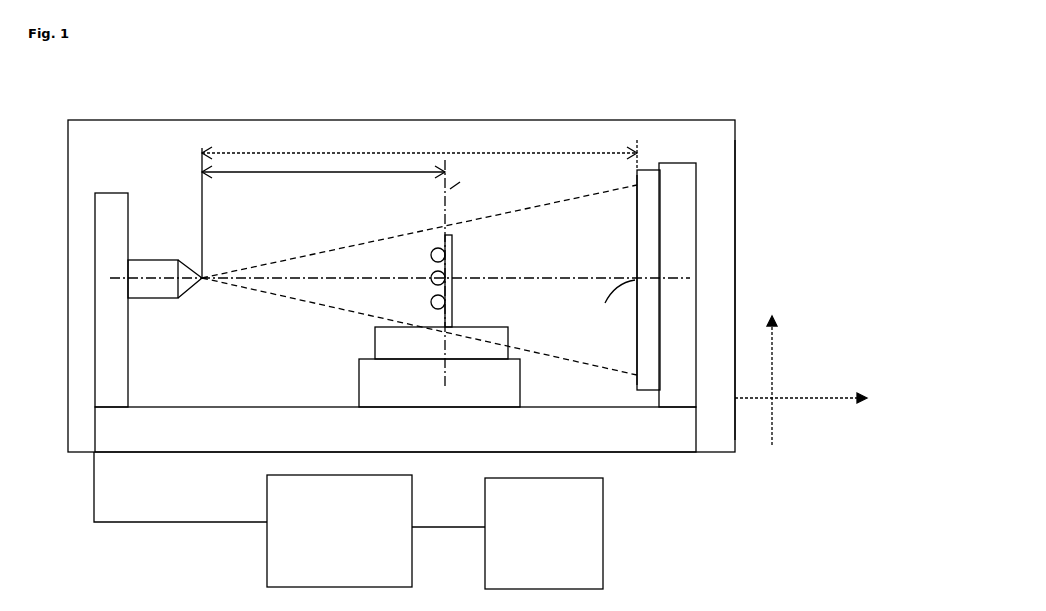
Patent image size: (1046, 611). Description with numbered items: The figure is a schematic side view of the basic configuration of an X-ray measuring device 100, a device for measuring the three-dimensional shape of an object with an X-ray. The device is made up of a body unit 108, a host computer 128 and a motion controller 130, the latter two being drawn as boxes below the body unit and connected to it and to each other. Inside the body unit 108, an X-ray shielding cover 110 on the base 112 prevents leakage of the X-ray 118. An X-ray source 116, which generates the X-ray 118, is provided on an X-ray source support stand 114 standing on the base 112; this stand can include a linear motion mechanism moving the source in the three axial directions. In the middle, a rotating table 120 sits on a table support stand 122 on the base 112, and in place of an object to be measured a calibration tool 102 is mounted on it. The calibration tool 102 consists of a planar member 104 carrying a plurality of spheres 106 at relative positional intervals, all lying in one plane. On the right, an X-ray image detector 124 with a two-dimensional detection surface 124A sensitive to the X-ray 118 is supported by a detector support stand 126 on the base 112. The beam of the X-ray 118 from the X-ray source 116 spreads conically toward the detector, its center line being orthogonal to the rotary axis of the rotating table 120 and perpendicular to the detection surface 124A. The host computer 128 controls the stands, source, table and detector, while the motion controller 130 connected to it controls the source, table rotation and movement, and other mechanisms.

The X-ray measuring device 100 is at (475, 113).
The calibration tool 102 is at (435, 268).
The planar member 104 is at (455, 270).
The spheres 106 is at (432, 250).
The body unit 108 is at (745, 130).
The X-ray shielding cover 110 is at (737, 192).
The base 112 is at (297, 440).
The X-ray source support stand 114 is at (124, 221).
The X-ray source 116 is at (165, 300).
The X-ray 118 is at (312, 257).
The rotating table 120 is at (372, 343).
The table support stand 122 is at (398, 380).
The X-ray image detector 124 is at (645, 377).
The detection surface 124A is at (633, 347).
The detector support stand 126 is at (689, 213).
The host computer 128 is at (314, 502).
The motion controller 130 is at (528, 502).